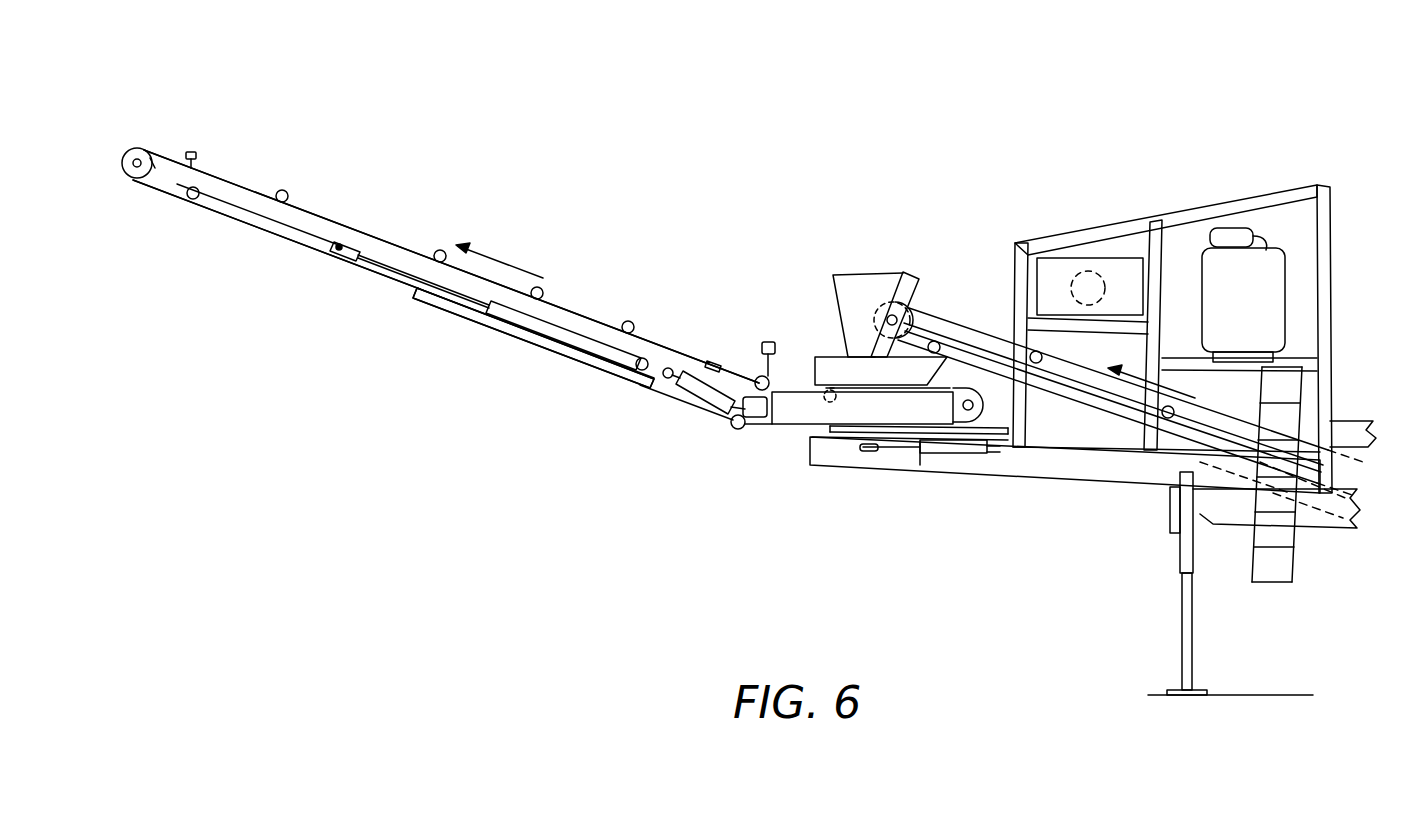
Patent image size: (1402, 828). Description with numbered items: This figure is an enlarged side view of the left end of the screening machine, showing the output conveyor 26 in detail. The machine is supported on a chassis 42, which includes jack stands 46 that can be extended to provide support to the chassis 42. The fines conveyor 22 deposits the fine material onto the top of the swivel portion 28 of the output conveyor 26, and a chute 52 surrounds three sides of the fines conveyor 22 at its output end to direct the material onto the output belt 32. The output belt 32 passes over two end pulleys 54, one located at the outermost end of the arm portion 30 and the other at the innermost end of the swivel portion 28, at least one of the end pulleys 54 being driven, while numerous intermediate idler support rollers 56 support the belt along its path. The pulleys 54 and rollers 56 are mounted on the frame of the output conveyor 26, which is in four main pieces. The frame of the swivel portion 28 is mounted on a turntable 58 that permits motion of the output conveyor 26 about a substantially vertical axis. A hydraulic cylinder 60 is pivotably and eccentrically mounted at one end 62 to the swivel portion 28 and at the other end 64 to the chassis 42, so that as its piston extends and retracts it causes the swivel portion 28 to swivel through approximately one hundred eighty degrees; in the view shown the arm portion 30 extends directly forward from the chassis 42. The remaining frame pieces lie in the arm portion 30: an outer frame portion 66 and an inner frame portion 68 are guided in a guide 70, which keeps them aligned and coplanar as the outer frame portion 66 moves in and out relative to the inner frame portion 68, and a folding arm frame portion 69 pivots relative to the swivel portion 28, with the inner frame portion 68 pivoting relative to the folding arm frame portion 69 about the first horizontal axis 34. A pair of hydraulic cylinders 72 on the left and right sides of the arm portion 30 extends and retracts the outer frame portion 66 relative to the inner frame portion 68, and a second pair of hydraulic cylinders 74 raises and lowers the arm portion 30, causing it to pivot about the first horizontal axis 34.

The fines conveyor 22 is at (950, 325).
The output conveyor 26 is at (708, 244).
The swivel portion 28 is at (837, 344).
The arm portion 30 is at (427, 204).
The output belt 32 is at (325, 203).
The first horizontal axis 34 is at (760, 378).
The chassis 42 is at (1097, 470).
The jack stands 46 is at (1166, 624).
The chute 52 is at (862, 278).
The end pulleys 54 is at (135, 149).
The intermediate idler support rollers 56 is at (284, 190).
The turntable 58 is at (822, 427).
The hydraulic cylinder 60 is at (950, 456).
The one end 62 is at (866, 458).
The other end 64 is at (995, 454).
The outer frame portion 66 is at (297, 243).
The inner frame portion 68 is at (583, 358).
The folding arm frame portion 69 is at (778, 364).
The guide 70 is at (440, 304).
The hydraulic cylinders 72 is at (543, 328).
The hydraulic cylinders 74 is at (703, 394).